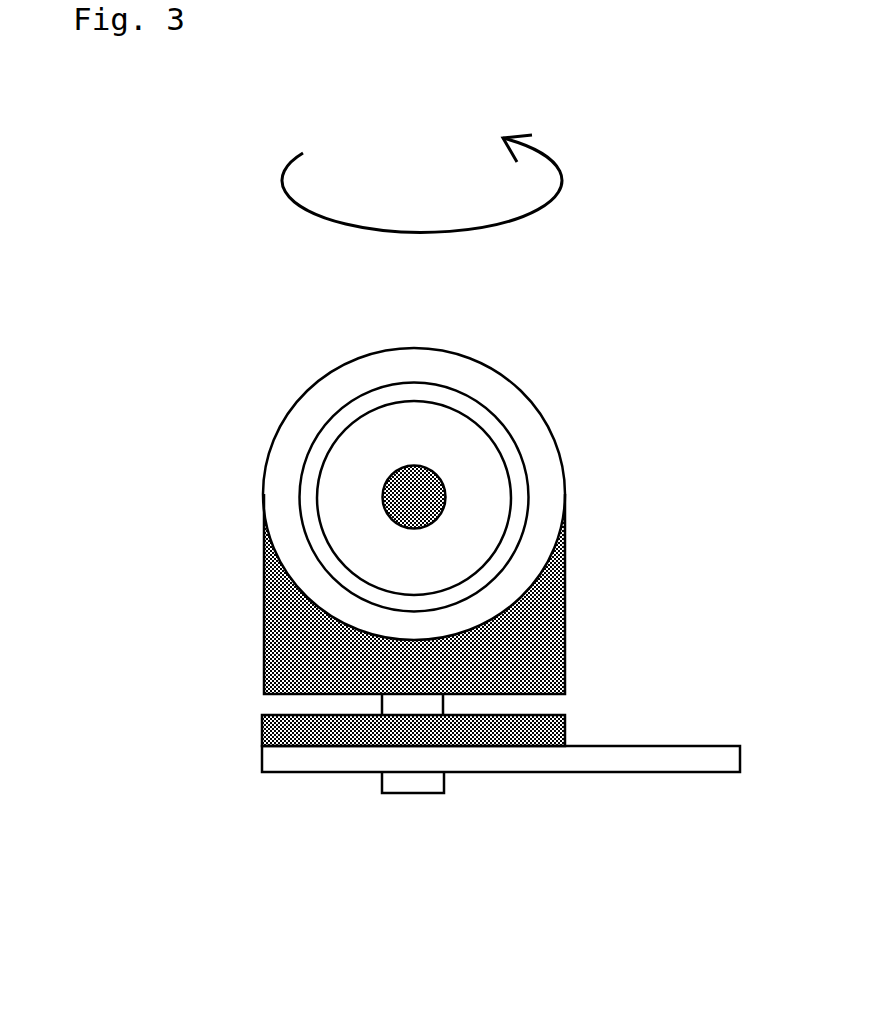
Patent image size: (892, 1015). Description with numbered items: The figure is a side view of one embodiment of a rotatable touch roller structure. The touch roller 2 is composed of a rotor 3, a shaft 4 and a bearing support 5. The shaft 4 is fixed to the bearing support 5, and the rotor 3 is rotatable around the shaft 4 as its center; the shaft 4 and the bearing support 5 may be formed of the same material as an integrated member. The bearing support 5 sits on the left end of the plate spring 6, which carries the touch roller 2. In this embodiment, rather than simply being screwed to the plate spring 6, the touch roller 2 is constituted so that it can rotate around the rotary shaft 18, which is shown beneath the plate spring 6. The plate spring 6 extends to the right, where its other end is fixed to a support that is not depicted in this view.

The touch roller 2 is at (248, 468).
The rotor 3 is at (532, 437).
The shaft 4 is at (413, 480).
The bearing support 5 is at (315, 655).
The plate spring 6 is at (638, 763).
The rotary shaft 18 is at (403, 787).